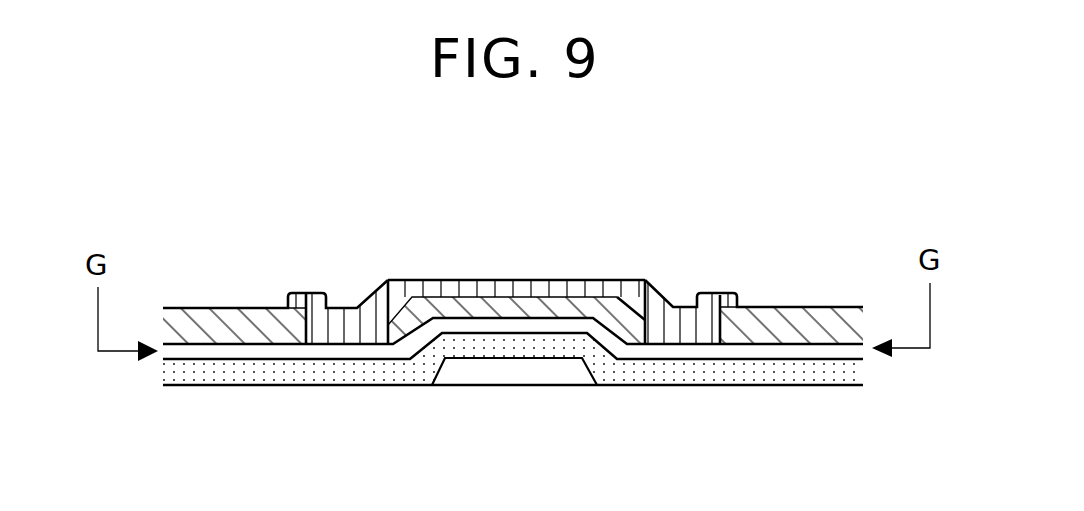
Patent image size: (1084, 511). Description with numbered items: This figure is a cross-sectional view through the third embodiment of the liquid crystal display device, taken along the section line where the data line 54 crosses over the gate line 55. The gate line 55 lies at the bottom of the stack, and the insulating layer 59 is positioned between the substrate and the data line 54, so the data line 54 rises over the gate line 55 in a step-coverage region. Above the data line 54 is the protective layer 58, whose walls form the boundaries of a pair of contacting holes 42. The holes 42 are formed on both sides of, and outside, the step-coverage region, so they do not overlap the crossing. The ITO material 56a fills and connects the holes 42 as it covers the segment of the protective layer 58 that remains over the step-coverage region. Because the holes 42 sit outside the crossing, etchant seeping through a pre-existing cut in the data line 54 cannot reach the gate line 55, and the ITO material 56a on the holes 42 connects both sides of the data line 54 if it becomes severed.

The contacting holes 42 is at (385, 325).
The data line 54 is at (697, 347).
The gate line 55 is at (543, 377).
The ITO material 56a is at (556, 298).
The protective layer 58 is at (437, 296).
The insulating layer 59 is at (753, 370).